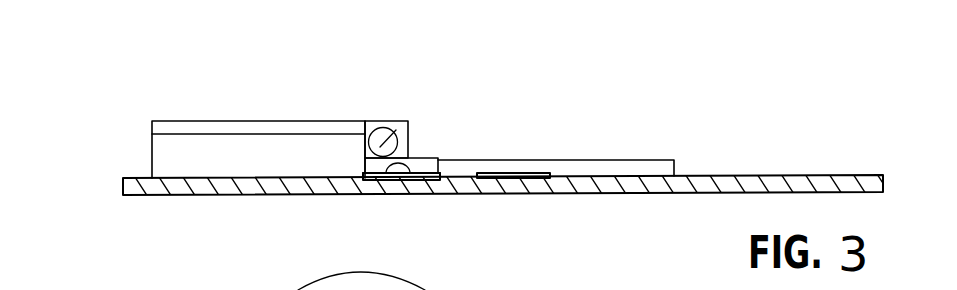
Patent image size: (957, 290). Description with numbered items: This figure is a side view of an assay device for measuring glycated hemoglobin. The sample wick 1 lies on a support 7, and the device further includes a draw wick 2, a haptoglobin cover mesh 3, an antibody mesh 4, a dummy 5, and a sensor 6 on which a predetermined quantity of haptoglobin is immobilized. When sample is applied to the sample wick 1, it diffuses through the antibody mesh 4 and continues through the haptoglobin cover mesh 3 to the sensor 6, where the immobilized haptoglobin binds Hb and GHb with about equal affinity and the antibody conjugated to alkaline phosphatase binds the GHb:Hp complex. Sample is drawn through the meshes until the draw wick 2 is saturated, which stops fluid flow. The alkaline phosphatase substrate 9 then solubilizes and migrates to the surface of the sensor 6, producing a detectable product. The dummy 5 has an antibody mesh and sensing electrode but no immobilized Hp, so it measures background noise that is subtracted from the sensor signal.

The sample wick 1 is at (205, 125).
The draw wick 2 is at (452, 168).
The haptoglobin cover mesh 3 is at (418, 161).
The antibody mesh 4 is at (408, 121).
The dummy 5 is at (537, 193).
The sensor 6 is at (363, 172).
The support 7 is at (162, 160).
The alkaline phosphatase substrate (pAPP) 9 is at (446, 192).